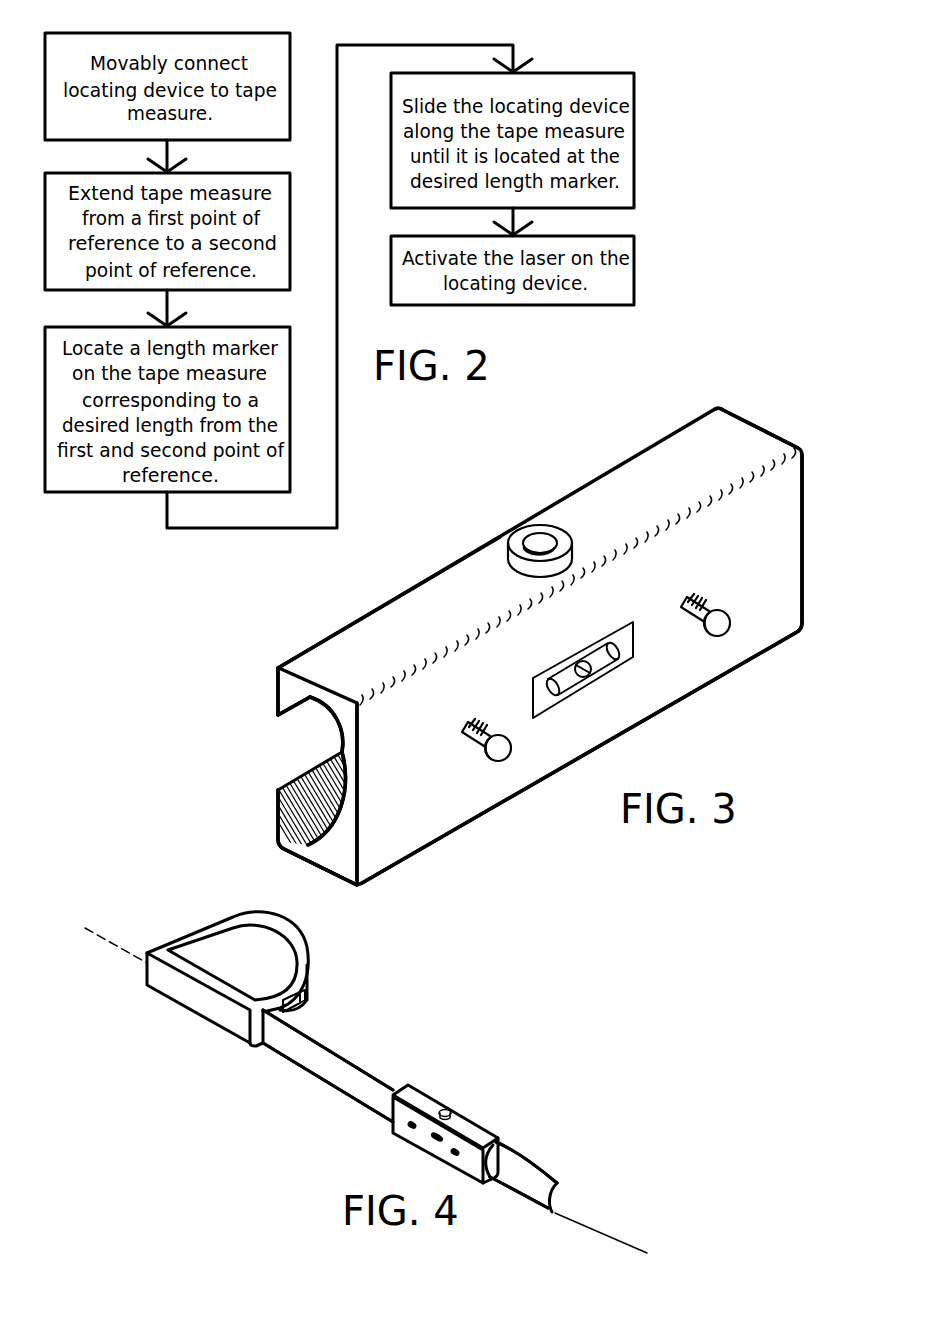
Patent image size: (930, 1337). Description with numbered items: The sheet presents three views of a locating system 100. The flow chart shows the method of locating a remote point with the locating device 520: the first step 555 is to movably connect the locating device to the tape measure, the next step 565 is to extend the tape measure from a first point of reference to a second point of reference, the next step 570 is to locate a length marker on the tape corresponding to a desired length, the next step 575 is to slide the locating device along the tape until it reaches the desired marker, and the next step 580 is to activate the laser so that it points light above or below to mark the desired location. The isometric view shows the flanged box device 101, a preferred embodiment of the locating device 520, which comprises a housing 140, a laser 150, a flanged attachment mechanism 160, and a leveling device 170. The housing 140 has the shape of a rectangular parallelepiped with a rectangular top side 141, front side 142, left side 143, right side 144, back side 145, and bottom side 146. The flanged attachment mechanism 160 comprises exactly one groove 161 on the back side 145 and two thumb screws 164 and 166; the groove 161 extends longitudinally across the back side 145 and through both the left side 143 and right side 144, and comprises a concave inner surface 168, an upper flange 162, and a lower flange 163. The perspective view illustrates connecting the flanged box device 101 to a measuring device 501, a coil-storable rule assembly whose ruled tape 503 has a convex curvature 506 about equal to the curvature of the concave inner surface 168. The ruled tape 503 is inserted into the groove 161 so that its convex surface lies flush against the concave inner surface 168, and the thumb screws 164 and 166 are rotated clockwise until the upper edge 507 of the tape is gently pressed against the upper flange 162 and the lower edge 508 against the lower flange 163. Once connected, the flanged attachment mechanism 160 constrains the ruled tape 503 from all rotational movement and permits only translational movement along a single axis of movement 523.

In FIG. 3, the locating system 100 is at (628, 426).
In FIG. 4, the locating system 100 is at (172, 1155).
In FIG. 3, the flanged box device 101 is at (578, 880).
In FIG. 4, the flanged box device 101 is at (495, 1108).
In FIG. 3, the housing 140 is at (338, 627).
In FIG. 3, the rectangular top side 141 is at (619, 484).
In FIG. 3, the rectangular front side 142 is at (774, 538).
In FIG. 3, the rectangular left side 143 is at (353, 834).
In FIG. 3, the rectangular right side 144 is at (748, 415).
In FIG. 3, the rectangular back side 145 is at (277, 673).
In FIG. 3, the rectangular bottom side 146 is at (343, 884).
In FIG. 3, the laser 150 is at (500, 520).
In FIG. 3, the flanged attachment mechanism 160 is at (250, 826).
In FIG. 3, the groove 161 is at (238, 736).
In FIG. 3, the upper flange 162 is at (303, 718).
In FIG. 3, the lower flange 163 is at (290, 786).
In FIG. 3, the thumb screw 164 is at (505, 775).
In FIG. 3, the thumb screw 166 is at (745, 631).
In FIG. 3, the concave inner surface 168 is at (336, 841).
In FIG. 3, the leveling device 170 is at (620, 685).
In FIG. 4, the measuring device 501 is at (200, 1017).
In FIG. 4, the ruled tape 503 is at (330, 1077).
In FIG. 4, the curvature 506 is at (572, 1189).
In FIG. 4, the upper edge 507 is at (345, 1038).
In FIG. 4, the lower edge 508 is at (352, 1110).
In FIG. 3, the locating device 520 is at (736, 353).
In FIG. 4, the axis of movement 523 is at (115, 948).
In FIG. 2, the first step 555 is at (263, 33).
In FIG. 2, the next step 565 is at (248, 173).
In FIG. 2, the next step 570 is at (113, 493).
In FIG. 2, the next step 575 is at (588, 73).
In FIG. 2, the next step 580 is at (603, 306).